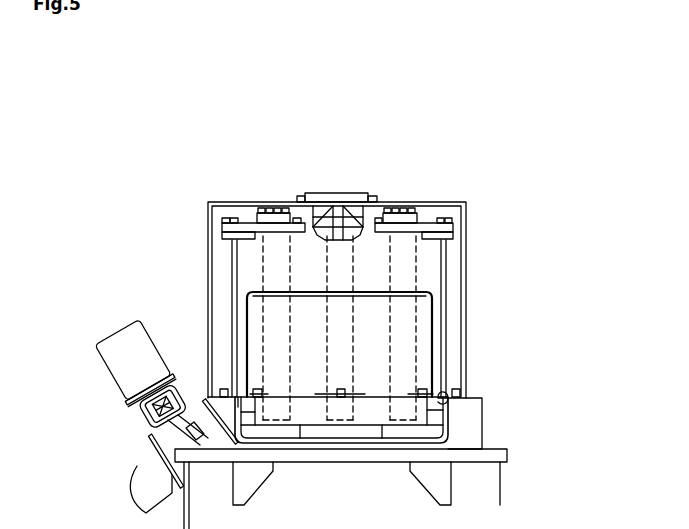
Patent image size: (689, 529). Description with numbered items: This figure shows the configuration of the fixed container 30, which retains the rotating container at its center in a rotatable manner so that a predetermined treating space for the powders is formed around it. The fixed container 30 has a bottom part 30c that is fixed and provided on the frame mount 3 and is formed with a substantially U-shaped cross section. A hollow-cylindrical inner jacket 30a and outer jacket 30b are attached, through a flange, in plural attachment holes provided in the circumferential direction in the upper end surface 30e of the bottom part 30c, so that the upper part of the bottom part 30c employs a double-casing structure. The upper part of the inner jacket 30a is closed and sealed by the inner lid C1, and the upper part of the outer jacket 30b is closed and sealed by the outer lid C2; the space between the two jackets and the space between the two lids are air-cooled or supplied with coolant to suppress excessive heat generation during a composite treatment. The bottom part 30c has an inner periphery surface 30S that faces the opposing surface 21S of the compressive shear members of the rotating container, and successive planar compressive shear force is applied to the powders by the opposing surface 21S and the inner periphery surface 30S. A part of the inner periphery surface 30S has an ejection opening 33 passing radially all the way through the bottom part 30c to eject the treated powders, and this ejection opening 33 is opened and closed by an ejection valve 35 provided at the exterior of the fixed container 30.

The fixed container 30 is at (510, 140).
The outer lid C2 is at (433, 202).
The inner lid C1 is at (450, 221).
The inner jacket 30a is at (446, 268).
The outer jacket 30b is at (466, 297).
The inner periphery surface 30S is at (440, 397).
The upper end surface 30e is at (478, 398).
The opposing surface 21S is at (447, 421).
The bottom part 30c is at (475, 438).
The frame mount 3 is at (485, 500).
The ejection valve 35 is at (118, 337).
The ejection opening 33 is at (205, 400).